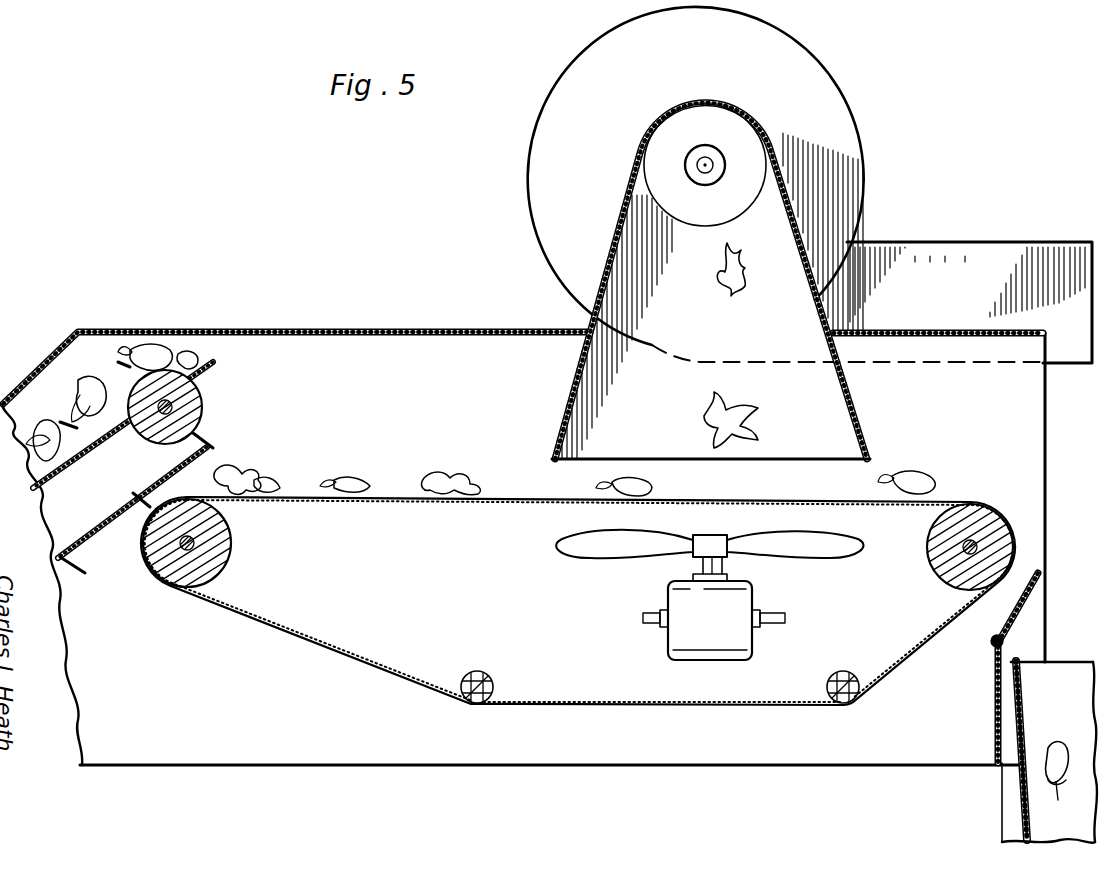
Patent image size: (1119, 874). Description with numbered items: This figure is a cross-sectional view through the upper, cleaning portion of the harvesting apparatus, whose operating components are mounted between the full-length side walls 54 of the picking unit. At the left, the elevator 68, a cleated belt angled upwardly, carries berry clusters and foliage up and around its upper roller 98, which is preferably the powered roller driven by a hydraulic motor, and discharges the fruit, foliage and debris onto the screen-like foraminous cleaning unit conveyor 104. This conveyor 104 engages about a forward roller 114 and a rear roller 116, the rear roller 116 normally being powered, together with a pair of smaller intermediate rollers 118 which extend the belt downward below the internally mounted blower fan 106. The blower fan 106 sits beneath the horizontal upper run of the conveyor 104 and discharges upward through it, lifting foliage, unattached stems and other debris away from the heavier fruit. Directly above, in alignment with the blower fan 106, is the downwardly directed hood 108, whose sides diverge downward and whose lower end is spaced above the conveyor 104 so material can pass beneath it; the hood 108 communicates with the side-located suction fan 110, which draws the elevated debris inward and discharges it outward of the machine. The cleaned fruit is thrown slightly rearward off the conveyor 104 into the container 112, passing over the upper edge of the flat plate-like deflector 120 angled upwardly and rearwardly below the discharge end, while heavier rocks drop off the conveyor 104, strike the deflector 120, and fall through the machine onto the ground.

The side walls 54 is at (470, 747).
The elevator 68 is at (113, 538).
The upper roller 98 is at (177, 410).
The cleaning unit conveyor 104 is at (352, 498).
The blower fan 106 is at (600, 546).
The hood 108 is at (816, 316).
The suction fan 110 is at (843, 150).
The container 112 is at (1053, 677).
The forward roller 114 is at (207, 558).
The rear roller 116 is at (935, 553).
The intermediate rollers 118 is at (495, 678).
The deflector 120 is at (1013, 613).